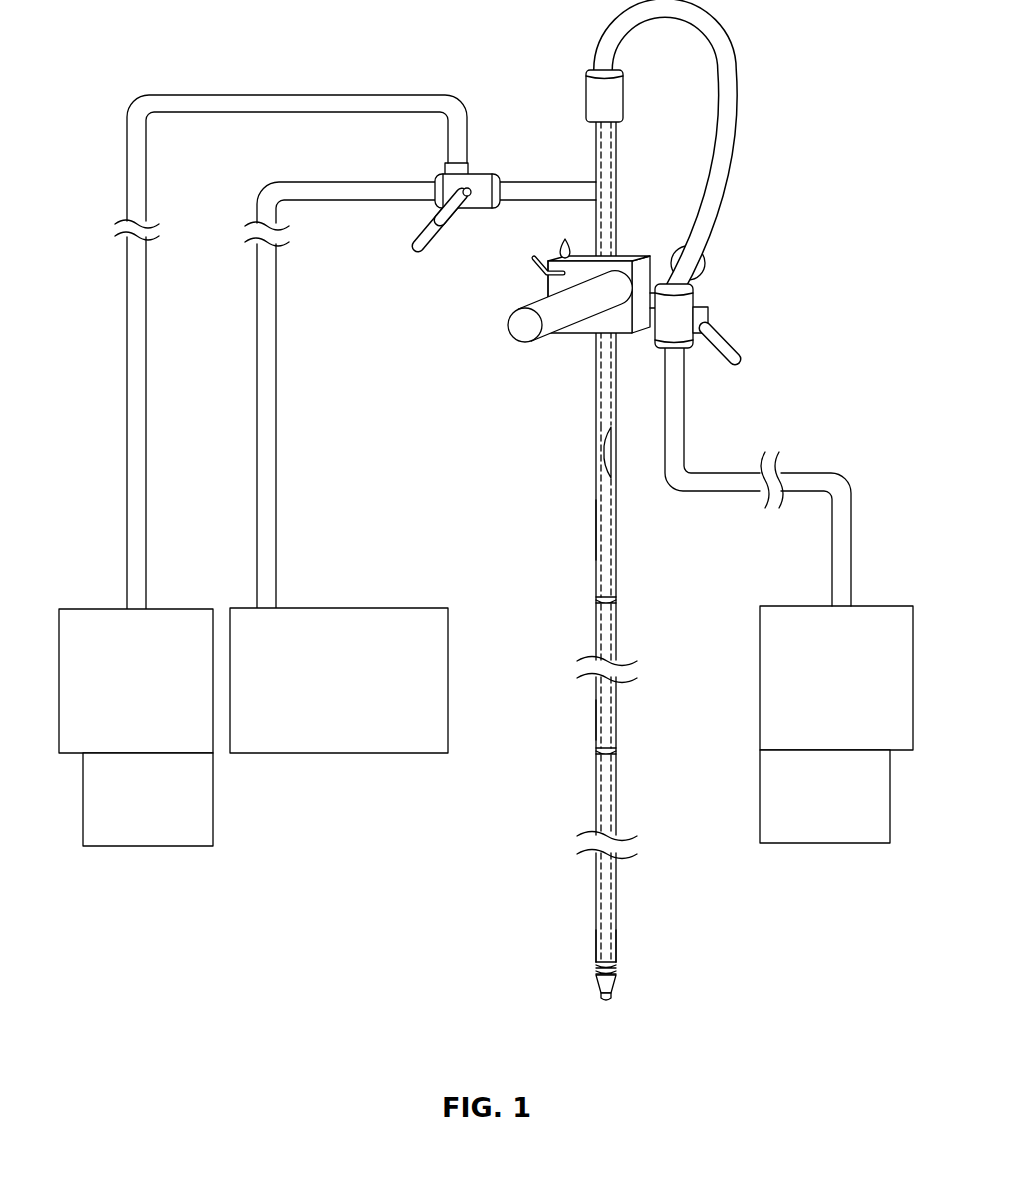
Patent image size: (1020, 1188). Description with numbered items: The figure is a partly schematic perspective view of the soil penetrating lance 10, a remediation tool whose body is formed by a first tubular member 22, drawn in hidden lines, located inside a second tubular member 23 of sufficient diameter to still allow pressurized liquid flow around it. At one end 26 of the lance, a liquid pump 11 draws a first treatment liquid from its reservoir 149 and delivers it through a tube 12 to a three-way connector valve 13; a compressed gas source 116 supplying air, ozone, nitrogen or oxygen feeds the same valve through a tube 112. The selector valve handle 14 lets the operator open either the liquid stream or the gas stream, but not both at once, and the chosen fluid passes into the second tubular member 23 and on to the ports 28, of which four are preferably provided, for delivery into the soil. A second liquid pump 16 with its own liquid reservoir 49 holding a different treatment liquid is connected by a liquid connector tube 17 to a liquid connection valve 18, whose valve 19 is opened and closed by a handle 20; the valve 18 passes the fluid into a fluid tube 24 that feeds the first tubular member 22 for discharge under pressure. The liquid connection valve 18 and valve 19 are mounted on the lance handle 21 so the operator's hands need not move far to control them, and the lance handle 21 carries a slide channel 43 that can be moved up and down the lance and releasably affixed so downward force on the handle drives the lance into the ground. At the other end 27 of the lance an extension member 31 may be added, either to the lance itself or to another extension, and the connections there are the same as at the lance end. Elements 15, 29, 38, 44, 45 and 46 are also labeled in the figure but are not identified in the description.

The soil penetrating lance 10 is at (594, 538).
The liquid pump 11 is at (105, 609).
The tube 12 is at (127, 313).
The three-way connector valve 13 is at (490, 208).
The selector valve handle 14 is at (478, 178).
The valve handle 15 is at (430, 252).
The liquid pump 16 is at (760, 684).
The liquid connector tube 17 is at (684, 447).
The liquid connection valve 18 is at (695, 298).
The valve 19 is at (710, 323).
The handle 20 is at (740, 356).
The lance handle 21 is at (571, 338).
The first tubular member 22 is at (616, 465).
The second tubular member 23 is at (617, 529).
The fluid tube 24 is at (643, 13).
The one end 26 is at (594, 134).
The other end 27 is at (596, 956).
The ports 28 is at (616, 968).
The tip 29 is at (605, 1001).
The extension member 31 is at (618, 633).
The nozzle 38 is at (614, 982).
The slide channel 43 is at (622, 256).
The block edge 44 is at (548, 260).
The nozzle / droplet 45,45b 45 is at (566, 239).
The hook 46 is at (533, 260).
The liquid reservoir 49 is at (760, 796).
The tube 112 is at (295, 203).
The source 116 is at (448, 686).
The reservoir 149 is at (150, 846).